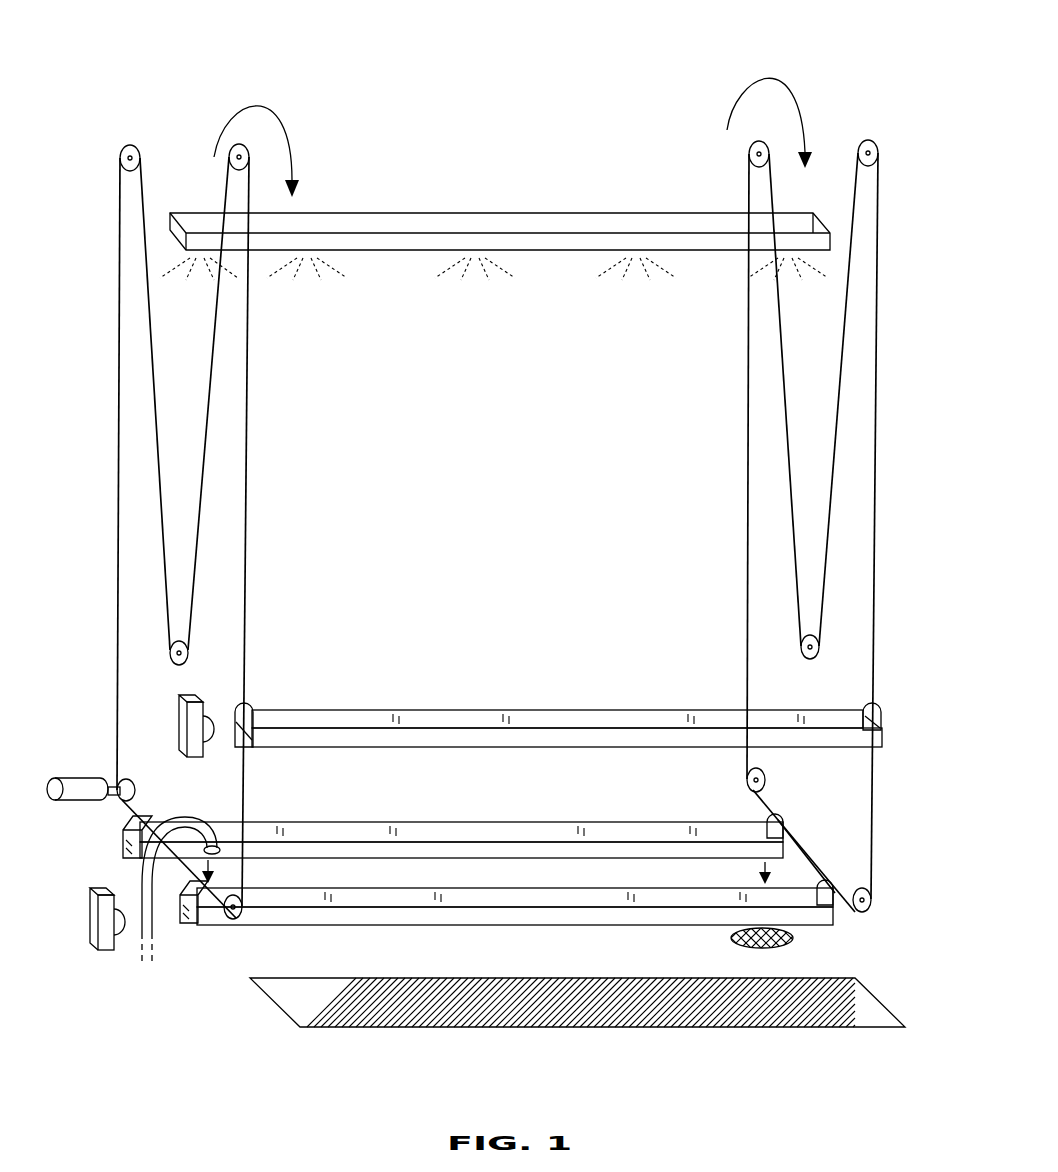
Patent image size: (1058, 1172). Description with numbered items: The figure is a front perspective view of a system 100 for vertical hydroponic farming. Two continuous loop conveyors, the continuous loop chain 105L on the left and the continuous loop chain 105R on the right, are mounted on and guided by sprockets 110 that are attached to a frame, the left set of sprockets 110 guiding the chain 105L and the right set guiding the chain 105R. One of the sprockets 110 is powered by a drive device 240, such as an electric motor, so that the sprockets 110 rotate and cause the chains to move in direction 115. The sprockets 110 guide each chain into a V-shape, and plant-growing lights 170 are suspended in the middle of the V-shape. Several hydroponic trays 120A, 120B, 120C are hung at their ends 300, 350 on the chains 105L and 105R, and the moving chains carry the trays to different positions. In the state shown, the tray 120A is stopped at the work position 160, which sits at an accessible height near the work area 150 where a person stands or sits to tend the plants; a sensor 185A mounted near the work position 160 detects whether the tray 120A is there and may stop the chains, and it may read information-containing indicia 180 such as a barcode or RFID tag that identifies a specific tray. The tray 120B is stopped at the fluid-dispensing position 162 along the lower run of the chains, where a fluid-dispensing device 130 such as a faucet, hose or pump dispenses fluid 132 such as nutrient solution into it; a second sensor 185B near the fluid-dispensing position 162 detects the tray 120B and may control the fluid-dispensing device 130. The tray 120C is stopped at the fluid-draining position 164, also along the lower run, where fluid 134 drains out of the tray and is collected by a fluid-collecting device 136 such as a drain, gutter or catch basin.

The system 100 is at (212, 66).
The continuous loop chain 105L is at (118, 378).
The continuous loop chain 105R is at (877, 392).
The sprocket 110 is at (128, 146).
The direction 115 is at (298, 190).
The tray 120A is at (556, 716).
The tray 120B is at (502, 822).
The tray 120C is at (520, 921).
The fluid-dispensing device 130 is at (138, 890).
The fluid 132 is at (216, 875).
The fluid 134 is at (777, 875).
The fluid-collecting device 136 is at (730, 938).
The work area 150 is at (545, 1045).
The work position 160 is at (898, 733).
The fluid-dispensing position 162 is at (838, 916).
The fluid-draining position 164 is at (122, 853).
The plant-growing lights 170 is at (527, 222).
The information-containing indicia 180 is at (196, 925).
The sensor 185A is at (182, 718).
The sensor 185B is at (100, 951).
The drive device 240 is at (84, 778).
The end of tray 300 is at (246, 705).
The end of tray 350 is at (880, 705).